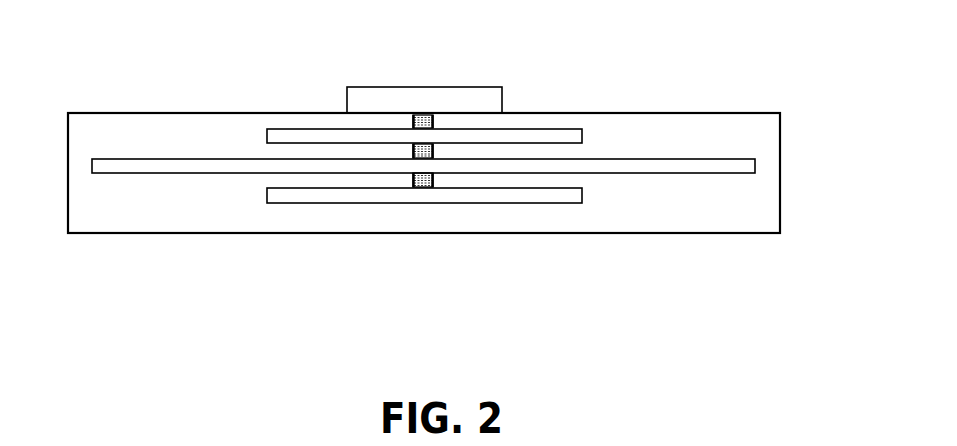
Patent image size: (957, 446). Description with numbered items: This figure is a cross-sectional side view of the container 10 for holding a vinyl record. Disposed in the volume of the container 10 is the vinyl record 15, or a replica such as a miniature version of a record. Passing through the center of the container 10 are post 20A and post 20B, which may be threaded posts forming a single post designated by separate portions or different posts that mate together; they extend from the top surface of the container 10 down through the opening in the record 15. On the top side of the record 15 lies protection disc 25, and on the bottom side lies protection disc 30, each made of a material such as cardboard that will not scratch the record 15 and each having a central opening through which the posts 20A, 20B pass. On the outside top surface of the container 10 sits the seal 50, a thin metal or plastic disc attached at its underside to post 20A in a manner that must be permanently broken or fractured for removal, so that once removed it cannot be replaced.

The container 10 is at (780, 152).
The vinyl record 15 is at (703, 160).
The post 20A is at (413, 125).
The post 20B is at (412, 181).
The protection disc 25 is at (558, 129).
The protection disc 30 is at (572, 195).
The seal 50 is at (445, 87).